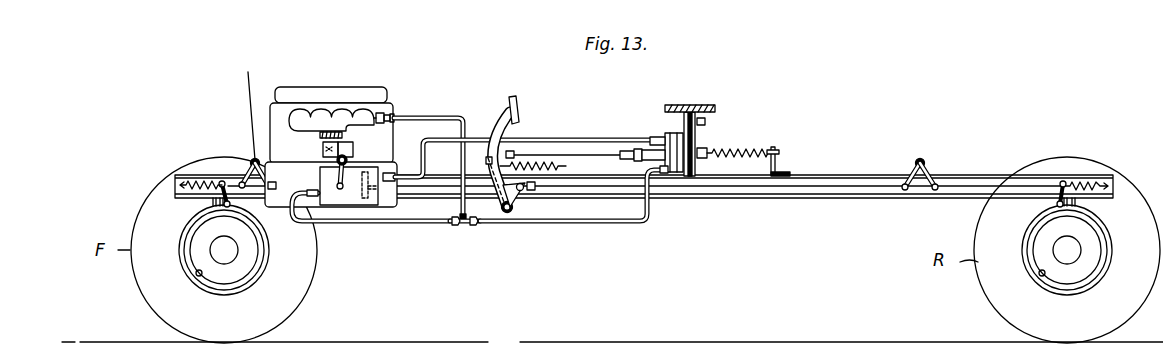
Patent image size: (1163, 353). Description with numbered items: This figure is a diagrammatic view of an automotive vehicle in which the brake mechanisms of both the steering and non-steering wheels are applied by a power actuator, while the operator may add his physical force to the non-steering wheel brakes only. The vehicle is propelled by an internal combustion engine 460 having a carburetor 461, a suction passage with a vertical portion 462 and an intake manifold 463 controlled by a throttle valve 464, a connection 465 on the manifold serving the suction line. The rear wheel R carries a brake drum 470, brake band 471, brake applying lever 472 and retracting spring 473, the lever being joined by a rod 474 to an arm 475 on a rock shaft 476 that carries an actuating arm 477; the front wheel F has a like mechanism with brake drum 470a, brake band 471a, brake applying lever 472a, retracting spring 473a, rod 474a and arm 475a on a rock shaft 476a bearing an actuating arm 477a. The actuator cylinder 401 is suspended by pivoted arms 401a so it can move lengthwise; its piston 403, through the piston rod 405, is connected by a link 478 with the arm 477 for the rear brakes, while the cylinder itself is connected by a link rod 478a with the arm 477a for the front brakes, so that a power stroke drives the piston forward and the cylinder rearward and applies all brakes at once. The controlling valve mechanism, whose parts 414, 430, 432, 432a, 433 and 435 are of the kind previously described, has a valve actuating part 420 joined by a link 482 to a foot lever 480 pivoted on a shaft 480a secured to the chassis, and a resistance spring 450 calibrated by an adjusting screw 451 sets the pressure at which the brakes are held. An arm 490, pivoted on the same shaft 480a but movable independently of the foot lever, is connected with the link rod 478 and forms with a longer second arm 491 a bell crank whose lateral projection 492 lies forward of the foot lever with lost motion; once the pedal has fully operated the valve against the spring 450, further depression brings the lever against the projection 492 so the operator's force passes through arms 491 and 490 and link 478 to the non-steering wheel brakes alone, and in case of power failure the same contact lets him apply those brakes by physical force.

The brake drum 470 is at (1040, 277).
The brake band 471 is at (1026, 268).
The brake applying lever 472 is at (1060, 182).
The retracting spring 473 is at (1085, 183).
The rod 474 is at (982, 176).
The arm 475 is at (930, 174).
The rock shaft 476 is at (928, 153).
The actuating arm 477 is at (908, 170).
The link 478 is at (722, 187).
The brake drum 470a is at (197, 275).
The brake band 471a is at (183, 268).
The brake applying lever 472a is at (220, 200).
The retracting spring 473a is at (196, 184).
The rod 474a is at (240, 181).
The arm 475a is at (262, 176).
The rock shaft 476a is at (252, 158).
The actuating arm 477a is at (247, 104).
The link rod 478a is at (284, 191).
The internal combustion engine 460 is at (298, 82).
The carburetor 461 is at (354, 150).
The vertical portion of suction passage 462 is at (320, 135).
The intake manifold 463 is at (318, 110).
The throttle valve 464 is at (323, 150).
The manifold fitting 465 is at (381, 112).
The actuator cylinder 401 is at (385, 207).
The pivoted arms 401a is at (343, 190).
The piston 403 is at (378, 200).
The piston rod 405 is at (411, 189).
The conduit 414 is at (592, 139).
The valve actuating part 420 is at (662, 137).
The mounting bracket 430 is at (682, 122).
The fluid pipe 432 is at (609, 223).
The fluid pipe branch 432a is at (442, 224).
The plate 433 is at (694, 112).
The nut 435 is at (706, 121).
The resistance spring 450 is at (738, 149).
The screw 451 is at (776, 148).
The foot lever 480 is at (508, 110).
The shaft 480a is at (507, 213).
The link 482 is at (555, 154).
The arm 490 is at (516, 196).
The second arm 491 is at (494, 178).
The lateral projection 492 is at (472, 114).